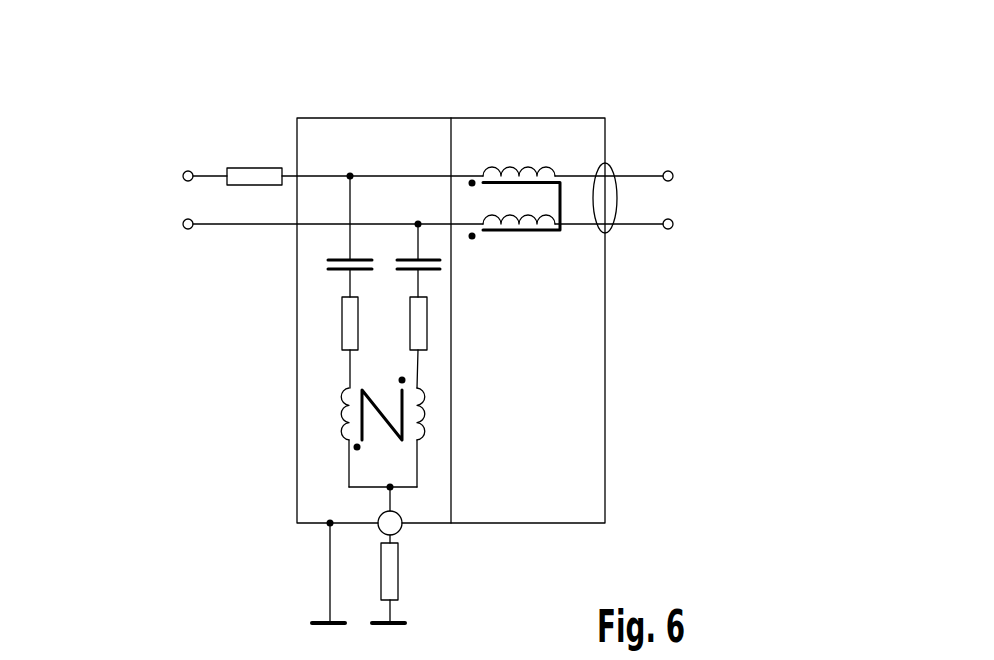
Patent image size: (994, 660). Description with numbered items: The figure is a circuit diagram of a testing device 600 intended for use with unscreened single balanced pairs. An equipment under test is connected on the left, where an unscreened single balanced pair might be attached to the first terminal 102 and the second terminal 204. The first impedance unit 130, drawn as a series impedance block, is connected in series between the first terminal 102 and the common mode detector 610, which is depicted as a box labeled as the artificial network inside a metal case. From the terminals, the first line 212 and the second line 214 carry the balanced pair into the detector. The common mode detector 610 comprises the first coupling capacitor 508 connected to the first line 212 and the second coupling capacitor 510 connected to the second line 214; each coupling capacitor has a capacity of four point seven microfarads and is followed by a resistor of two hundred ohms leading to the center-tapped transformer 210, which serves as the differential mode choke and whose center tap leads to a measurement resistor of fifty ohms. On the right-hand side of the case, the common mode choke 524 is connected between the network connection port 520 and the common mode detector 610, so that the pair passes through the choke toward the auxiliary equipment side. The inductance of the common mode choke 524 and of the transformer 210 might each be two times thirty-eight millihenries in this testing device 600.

The testing device 600 is at (288, 102).
The common mode detector 610 is at (422, 117).
The first terminal 102 is at (187, 170).
The first impedance unit 130 is at (233, 168).
The first line 212 is at (318, 175).
The second terminal 204 is at (184, 227).
The second line 214 is at (215, 228).
The common mode choke 524 is at (490, 167).
The network connection port 520 is at (615, 168).
The first coupling capacitor 508 is at (347, 257).
The second coupling capacitor 510 is at (430, 255).
The transformer 210 is at (427, 400).